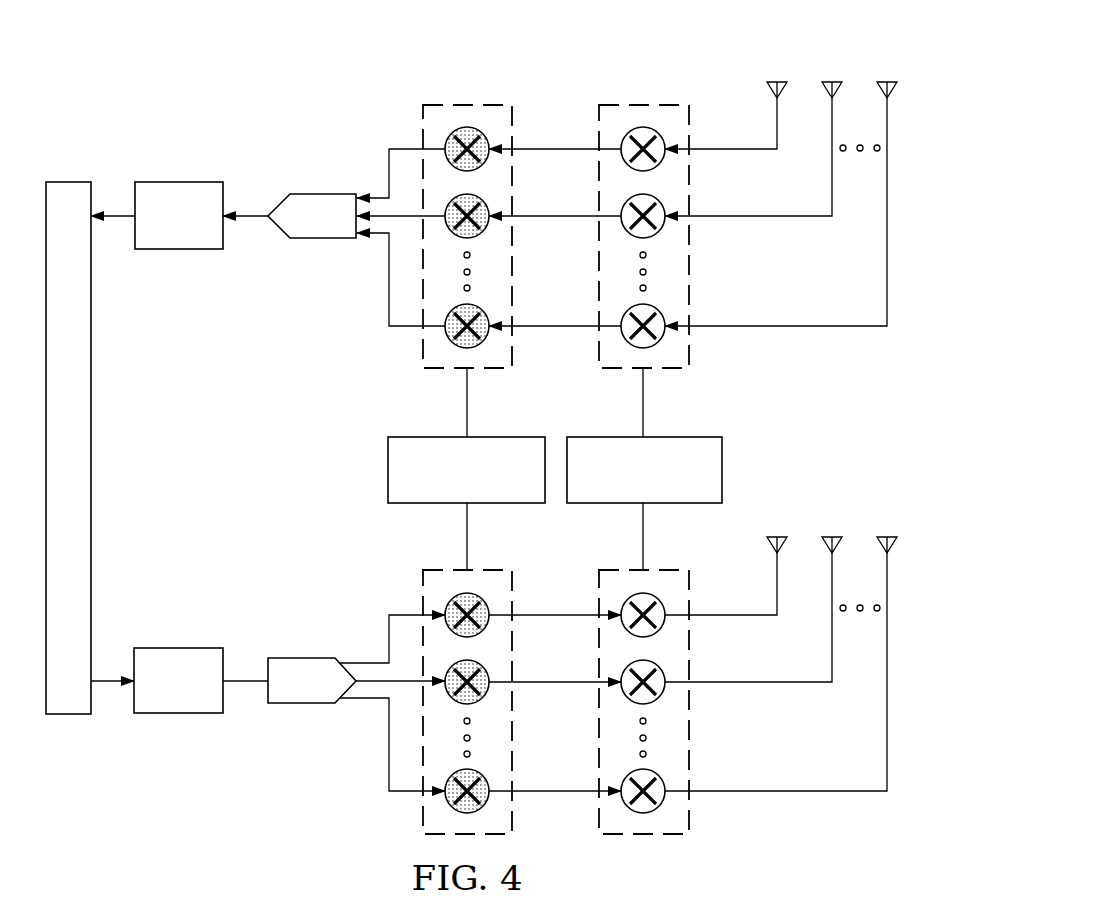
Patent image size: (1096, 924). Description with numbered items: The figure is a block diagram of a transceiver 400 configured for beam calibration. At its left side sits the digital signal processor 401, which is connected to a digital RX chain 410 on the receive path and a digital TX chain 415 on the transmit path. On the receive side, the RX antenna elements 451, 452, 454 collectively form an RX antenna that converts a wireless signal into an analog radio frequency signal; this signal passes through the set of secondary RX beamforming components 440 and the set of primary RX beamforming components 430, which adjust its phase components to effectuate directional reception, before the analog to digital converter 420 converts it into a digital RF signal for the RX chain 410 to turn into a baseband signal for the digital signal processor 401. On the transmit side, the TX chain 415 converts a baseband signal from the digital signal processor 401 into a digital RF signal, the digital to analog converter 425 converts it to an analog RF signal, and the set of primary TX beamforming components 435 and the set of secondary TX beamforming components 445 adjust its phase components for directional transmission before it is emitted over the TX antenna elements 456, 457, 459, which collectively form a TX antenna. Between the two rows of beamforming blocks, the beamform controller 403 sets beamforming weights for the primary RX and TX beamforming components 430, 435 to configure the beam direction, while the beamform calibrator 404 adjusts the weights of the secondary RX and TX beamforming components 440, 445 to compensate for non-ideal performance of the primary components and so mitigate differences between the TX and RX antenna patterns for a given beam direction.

The transceiver 400 is at (322, 72).
The digital signal processor 401 is at (62, 182).
The beamform controller 403 is at (445, 437).
The beamform calibrator 404 is at (666, 437).
The digital RX chain 410 is at (175, 182).
The digital TX chain 415 is at (178, 713).
The analog to digital converter 420 is at (320, 194).
The digital to analog converter 425 is at (300, 703).
The set of primary RX beamforming components 430 is at (466, 105).
The set of primary TX beamforming components 435 is at (434, 570).
The set of secondary RX beamforming components 440 is at (643, 105).
The set of secondary TX beamforming components 445 is at (675, 570).
The RX antenna element 451 is at (777, 82).
The RX antenna element 452 is at (832, 82).
The RX antenna element 454 is at (887, 82).
The TX antenna element 456 is at (777, 537).
The TX antenna element 457 is at (832, 537).
The TX antenna element 459 is at (887, 537).